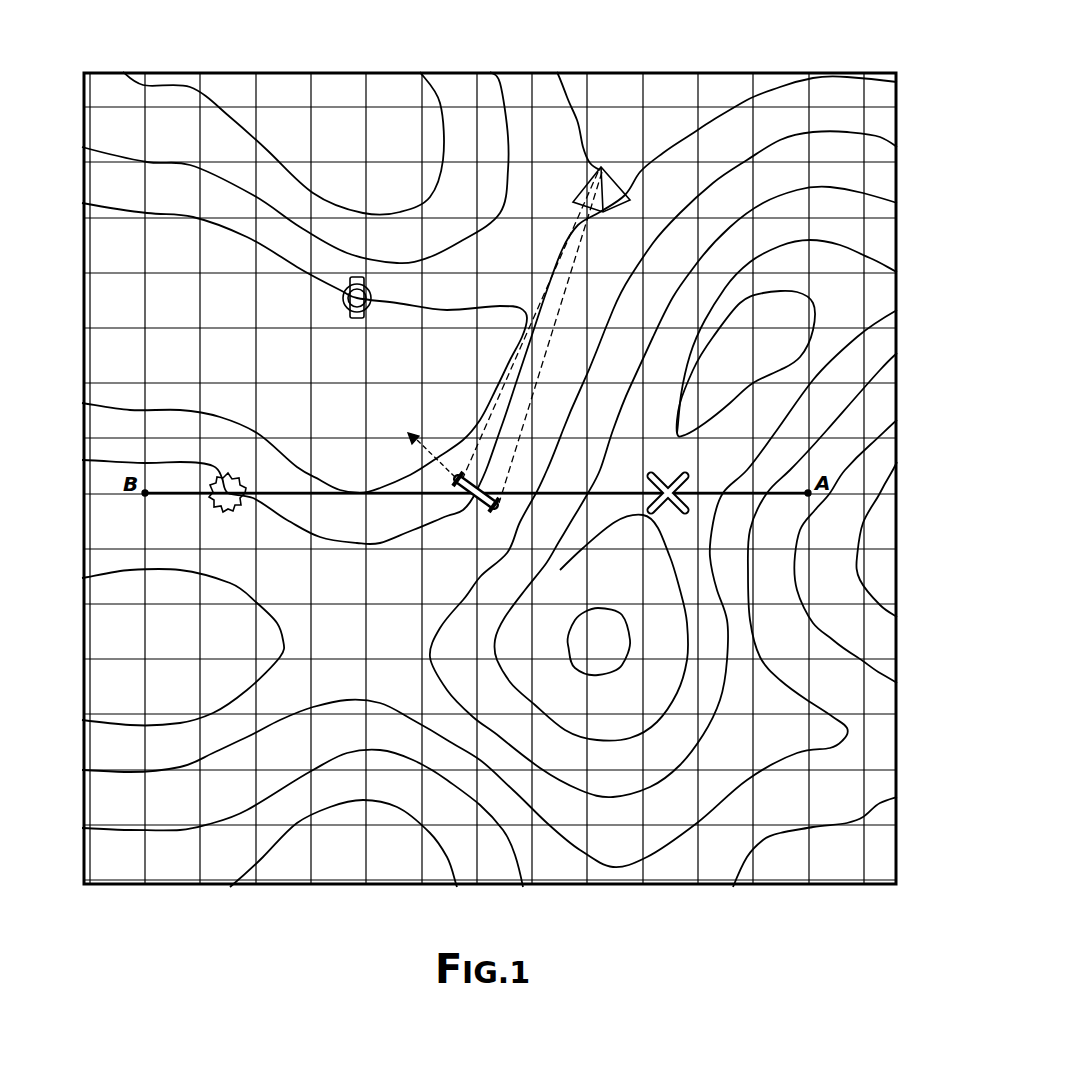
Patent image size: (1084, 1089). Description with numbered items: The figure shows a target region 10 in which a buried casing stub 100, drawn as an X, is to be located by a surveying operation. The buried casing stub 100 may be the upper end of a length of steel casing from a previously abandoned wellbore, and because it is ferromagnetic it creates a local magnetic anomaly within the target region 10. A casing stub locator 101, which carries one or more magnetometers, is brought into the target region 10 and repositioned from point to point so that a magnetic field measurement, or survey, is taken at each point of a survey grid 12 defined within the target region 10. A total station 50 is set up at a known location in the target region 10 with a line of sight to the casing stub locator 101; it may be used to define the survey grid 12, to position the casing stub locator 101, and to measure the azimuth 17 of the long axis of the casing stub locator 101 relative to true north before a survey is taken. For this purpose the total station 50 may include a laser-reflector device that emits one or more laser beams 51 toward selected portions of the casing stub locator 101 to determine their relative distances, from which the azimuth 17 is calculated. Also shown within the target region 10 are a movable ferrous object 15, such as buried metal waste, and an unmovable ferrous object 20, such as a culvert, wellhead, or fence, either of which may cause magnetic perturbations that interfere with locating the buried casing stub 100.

The target region 10 is at (83, 87).
The survey grid 12 is at (850, 716).
The movable ferrous object 15 is at (229, 477).
The azimuth 17 is at (428, 448).
The unmovable ferrous object 20 is at (350, 312).
The total station 50 is at (631, 198).
The laser beams 51 is at (567, 253).
The buried casing stub 100 is at (684, 478).
The casing stub locator 101 is at (445, 513).